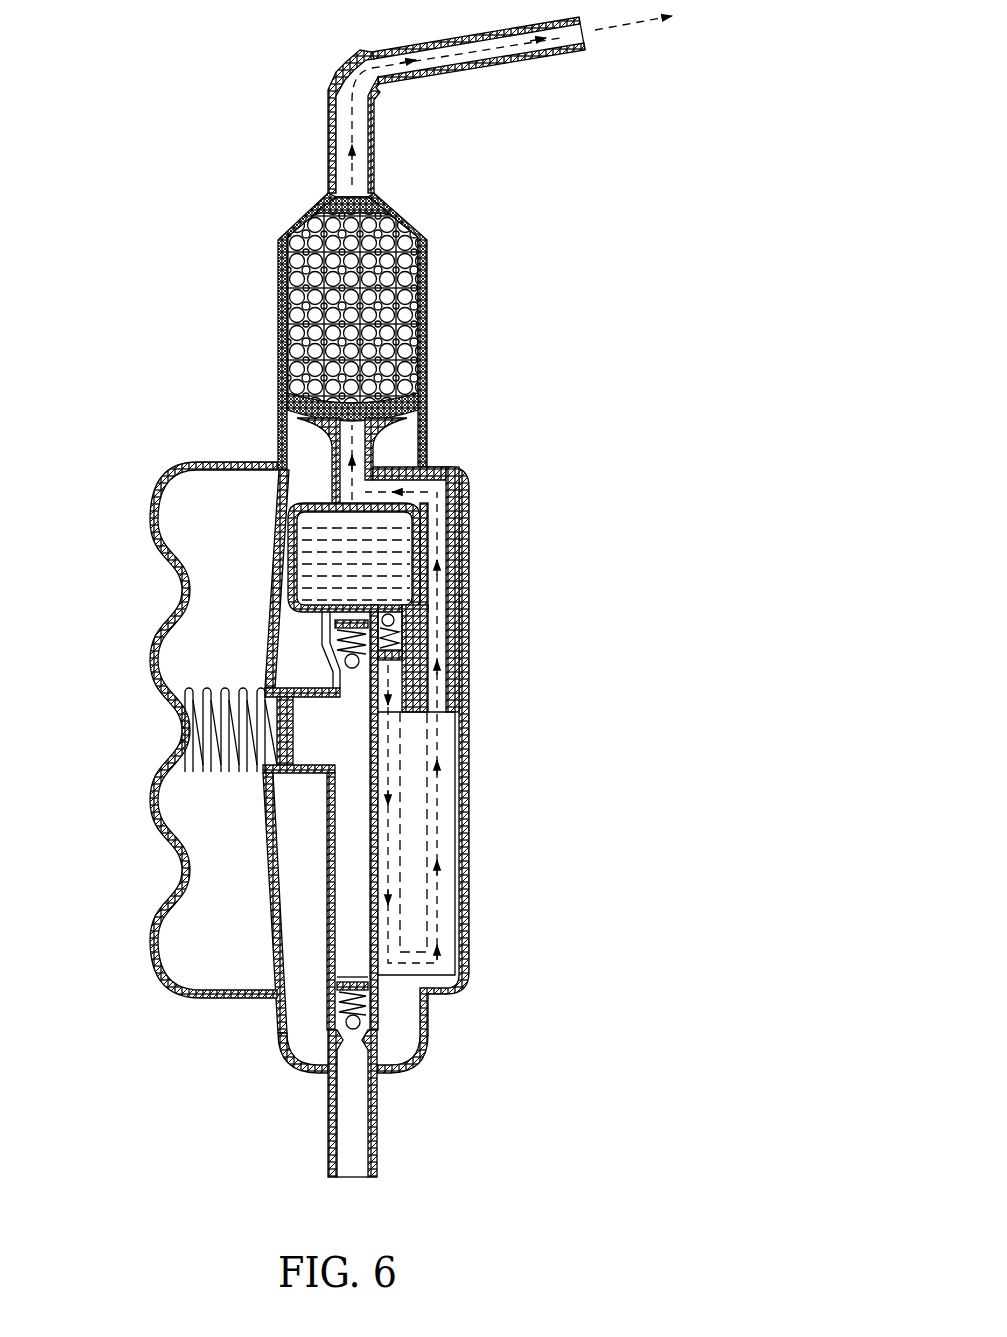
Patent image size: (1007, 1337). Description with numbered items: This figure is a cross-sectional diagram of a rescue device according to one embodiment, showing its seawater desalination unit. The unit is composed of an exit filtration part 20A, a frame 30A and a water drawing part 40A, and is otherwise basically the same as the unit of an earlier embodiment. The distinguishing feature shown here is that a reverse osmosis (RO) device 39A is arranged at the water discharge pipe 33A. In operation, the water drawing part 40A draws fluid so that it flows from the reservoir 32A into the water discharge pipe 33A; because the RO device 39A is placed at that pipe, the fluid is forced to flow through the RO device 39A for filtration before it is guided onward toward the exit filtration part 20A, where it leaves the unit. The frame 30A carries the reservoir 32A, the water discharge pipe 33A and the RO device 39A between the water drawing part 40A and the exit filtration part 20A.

The exit filtration part 20A is at (268, 318).
The frame 30A is at (481, 573).
The reservoir 32A is at (302, 512).
The water discharge pipe 33A is at (395, 690).
The reverse osmosis (RO) device 39A is at (442, 826).
The water drawing part 40A is at (125, 812).